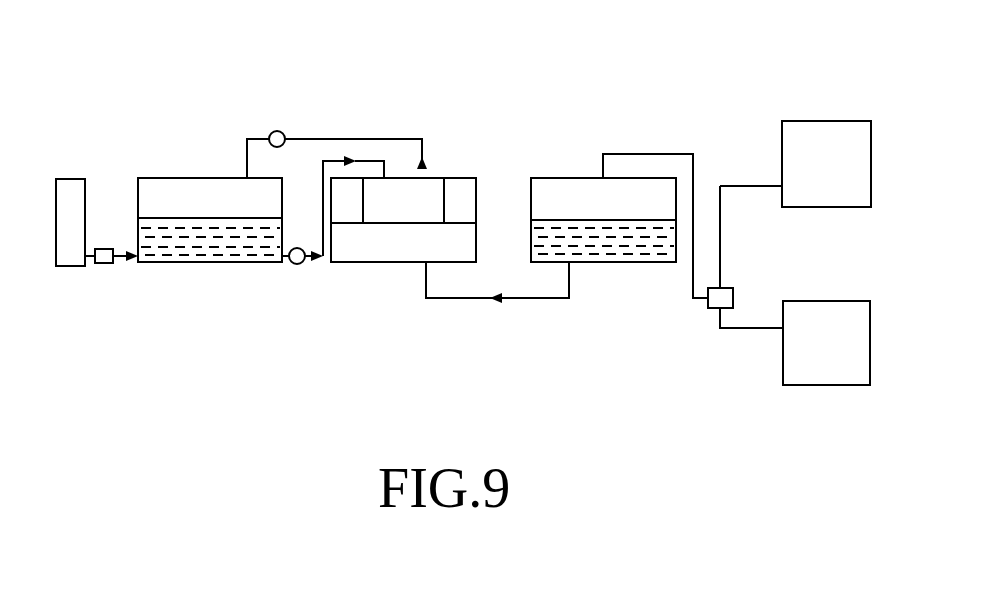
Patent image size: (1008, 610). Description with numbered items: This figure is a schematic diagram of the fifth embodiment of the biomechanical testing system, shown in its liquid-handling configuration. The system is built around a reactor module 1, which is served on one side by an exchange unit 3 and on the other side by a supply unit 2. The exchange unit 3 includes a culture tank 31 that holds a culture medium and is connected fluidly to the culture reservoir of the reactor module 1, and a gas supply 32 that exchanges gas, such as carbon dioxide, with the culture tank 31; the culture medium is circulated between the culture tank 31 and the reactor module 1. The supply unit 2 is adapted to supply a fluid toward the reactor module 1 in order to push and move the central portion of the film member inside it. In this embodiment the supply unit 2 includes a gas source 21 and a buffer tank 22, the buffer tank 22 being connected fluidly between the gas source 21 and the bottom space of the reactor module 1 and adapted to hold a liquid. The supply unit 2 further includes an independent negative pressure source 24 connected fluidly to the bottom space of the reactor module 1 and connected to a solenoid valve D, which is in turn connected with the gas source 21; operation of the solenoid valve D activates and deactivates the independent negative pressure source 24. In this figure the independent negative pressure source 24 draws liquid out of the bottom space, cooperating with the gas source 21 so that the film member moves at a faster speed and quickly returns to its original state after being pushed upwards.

The reactor module 1 is at (482, 141).
The supply unit 2 is at (701, 249).
The exchange unit 3 is at (167, 244).
The gas source 21 is at (826, 121).
The buffer tank 22 is at (620, 263).
The independent negative pressure source 24 is at (828, 385).
The culture tank 31 is at (185, 178).
The gas supply 32 is at (69, 266).
The solenoid valve D is at (712, 308).